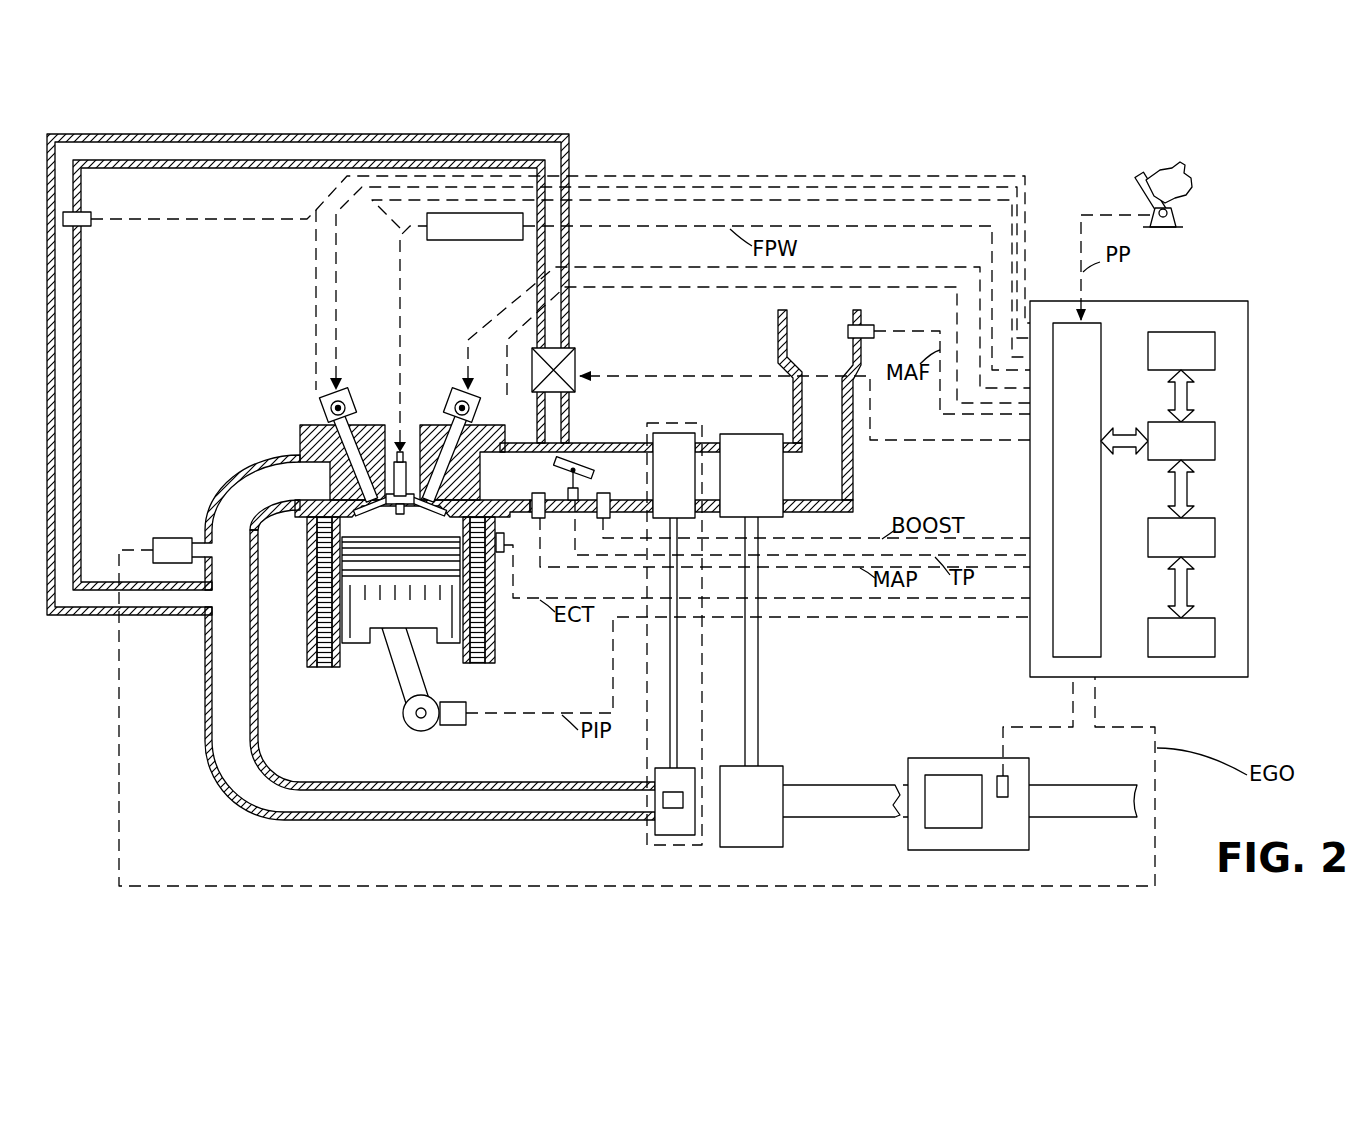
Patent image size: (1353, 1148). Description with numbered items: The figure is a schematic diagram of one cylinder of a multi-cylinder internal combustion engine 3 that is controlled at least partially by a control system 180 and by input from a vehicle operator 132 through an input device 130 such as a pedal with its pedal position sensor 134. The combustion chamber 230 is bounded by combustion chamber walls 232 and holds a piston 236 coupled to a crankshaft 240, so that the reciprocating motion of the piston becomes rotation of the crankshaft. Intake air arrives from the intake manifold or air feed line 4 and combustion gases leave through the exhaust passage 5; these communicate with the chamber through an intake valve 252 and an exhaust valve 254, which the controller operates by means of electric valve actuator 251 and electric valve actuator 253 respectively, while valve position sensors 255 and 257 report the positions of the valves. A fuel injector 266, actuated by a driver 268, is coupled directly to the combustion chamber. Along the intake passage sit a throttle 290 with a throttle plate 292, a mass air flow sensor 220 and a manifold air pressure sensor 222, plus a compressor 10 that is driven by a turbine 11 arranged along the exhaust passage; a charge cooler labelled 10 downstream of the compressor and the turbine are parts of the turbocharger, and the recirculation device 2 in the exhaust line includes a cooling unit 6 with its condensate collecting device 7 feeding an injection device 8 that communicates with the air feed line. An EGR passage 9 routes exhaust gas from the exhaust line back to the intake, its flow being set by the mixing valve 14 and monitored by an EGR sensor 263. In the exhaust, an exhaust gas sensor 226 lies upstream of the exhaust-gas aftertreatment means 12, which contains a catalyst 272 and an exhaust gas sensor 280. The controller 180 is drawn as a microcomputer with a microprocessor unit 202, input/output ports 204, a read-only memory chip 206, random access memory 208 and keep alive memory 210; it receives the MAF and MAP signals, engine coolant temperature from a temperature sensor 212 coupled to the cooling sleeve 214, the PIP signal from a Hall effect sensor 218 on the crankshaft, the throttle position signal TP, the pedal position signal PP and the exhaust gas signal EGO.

The recirculation device 2 is at (688, 426).
The internal combustion engine 3 is at (209, 365).
The air feed line 4 is at (805, 356).
The exhaust line 5 is at (262, 492).
The cooling unit 6 is at (675, 836).
The condensate collecting device 7 is at (666, 810).
The injection device 8 is at (690, 470).
The exhaust-gas recirculation line 9 is at (318, 136).
The compressor 10 is at (740, 486).
The turbine 11 is at (740, 818).
The exhaust-gas aftertreatment means 12 is at (931, 758).
The mixing valve 14 is at (577, 371).
The input device 130 is at (1145, 197).
The vehicle operator 132 is at (1193, 180).
The pedal position sensor 134 is at (1178, 214).
The control system 180 is at (1240, 301).
The microprocessor unit 202 is at (1215, 442).
The input/output ports 204 is at (1105, 330).
The read-only memory chip 206 is at (1215, 352).
The random access memory 208 is at (1215, 540).
The keep alive memory 210 is at (1215, 640).
The temperature sensor 212 is at (503, 548).
The cooling sleeve 214 is at (490, 620).
The Hall effect sensor 218 is at (458, 727).
The mass air flow sensor 220 is at (866, 325).
The manifold air pressure sensor 222 is at (536, 500).
The exhaust gas sensor 226 is at (153, 540).
The combustion chamber 230 is at (375, 522).
The combustion chamber walls 232 is at (345, 655).
The piston 236 is at (387, 614).
The crankshaft 240 is at (413, 730).
The electric valve actuator 251 is at (462, 392).
The intake valve 252 is at (442, 493).
The electric valve actuator 253 is at (343, 392).
The exhaust valve 254 is at (325, 458).
The valve position sensor 255 is at (480, 407).
The valve position sensor 257 is at (328, 420).
The EGR sensor 263 is at (92, 226).
The fuel injector 266 is at (402, 450).
The driver 268 is at (510, 242).
The catalyst 272 is at (935, 812).
The exhaust gas sensor 280 is at (1010, 783).
The throttle 290 is at (569, 463).
The throttle plate 292 is at (580, 488).